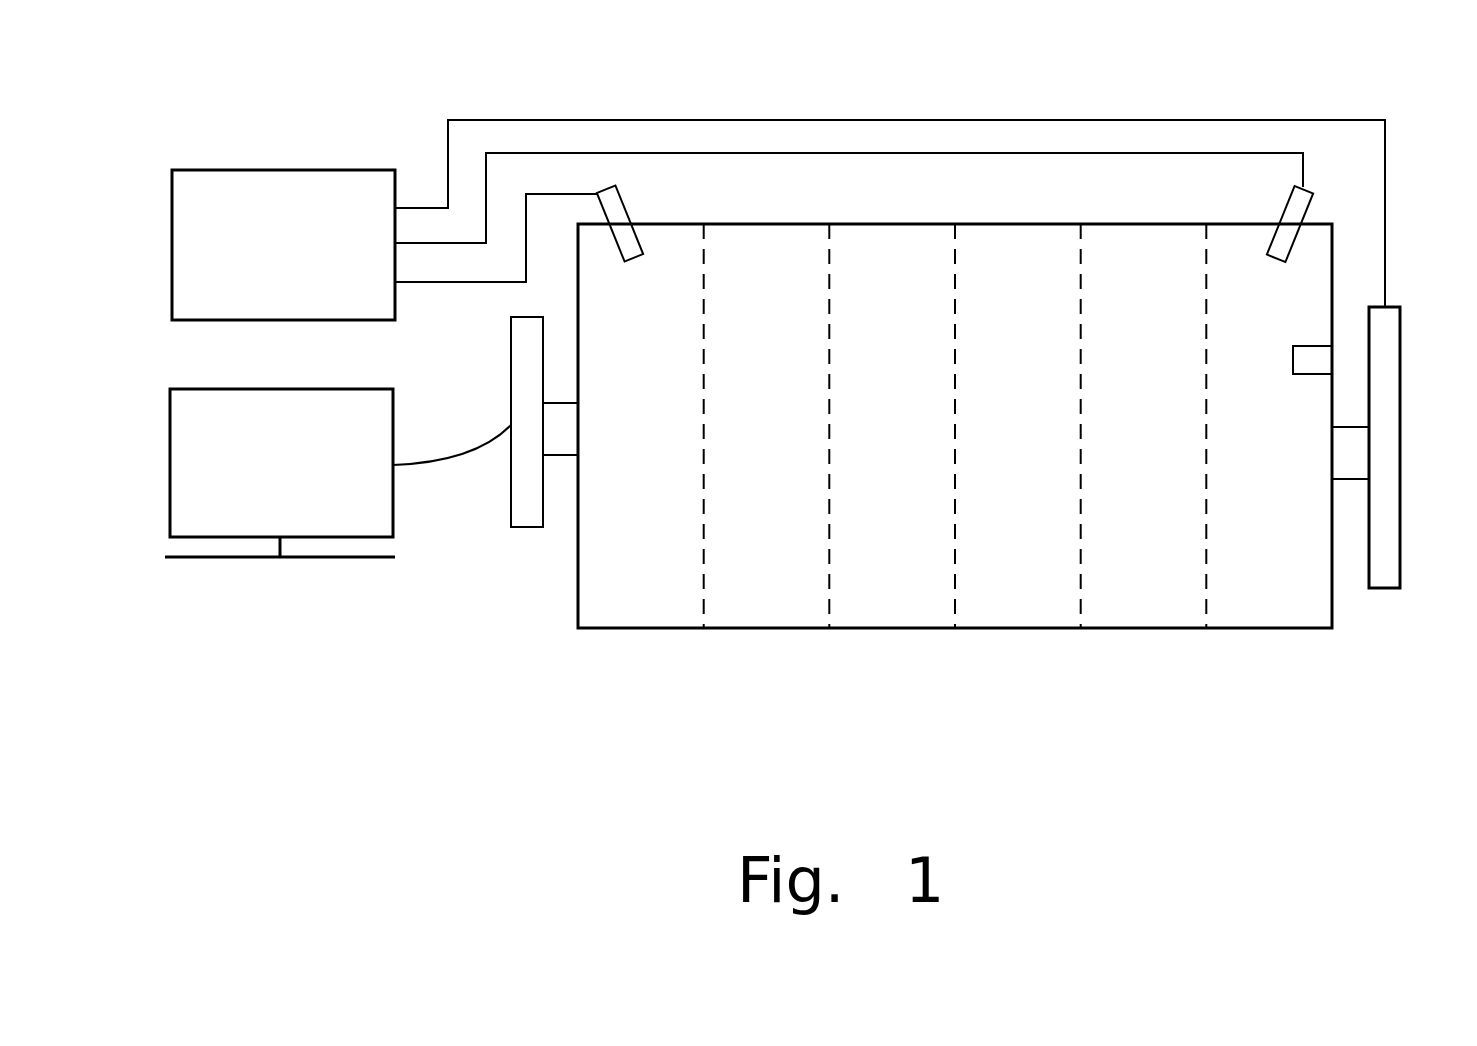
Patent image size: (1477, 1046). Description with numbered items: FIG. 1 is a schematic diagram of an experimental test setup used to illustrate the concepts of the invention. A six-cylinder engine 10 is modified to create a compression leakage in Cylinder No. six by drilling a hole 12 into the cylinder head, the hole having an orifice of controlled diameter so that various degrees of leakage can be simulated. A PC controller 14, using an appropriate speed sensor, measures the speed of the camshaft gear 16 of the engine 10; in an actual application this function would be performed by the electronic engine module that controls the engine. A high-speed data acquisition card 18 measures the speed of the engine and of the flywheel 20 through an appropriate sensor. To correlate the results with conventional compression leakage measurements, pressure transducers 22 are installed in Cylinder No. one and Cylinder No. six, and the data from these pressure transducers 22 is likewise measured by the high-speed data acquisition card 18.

The engine 10 is at (1135, 628).
The hole 12 is at (1308, 345).
The PC controller 14 is at (170, 462).
The camshaft gear 16 is at (518, 529).
The high-speed data acquisition (HSDA) card 18 is at (278, 170).
The flywheel 20 is at (1390, 592).
The pressure transducers 22 is at (635, 212).